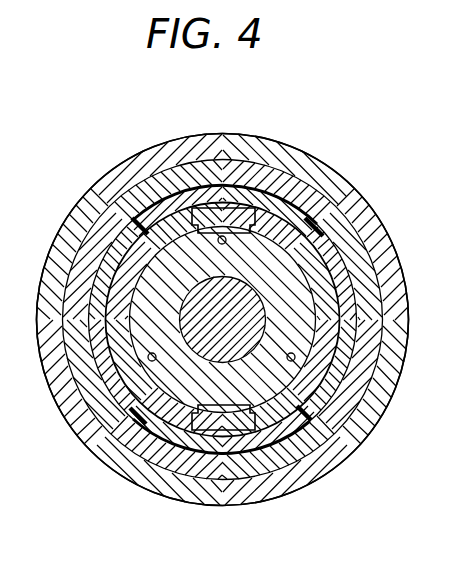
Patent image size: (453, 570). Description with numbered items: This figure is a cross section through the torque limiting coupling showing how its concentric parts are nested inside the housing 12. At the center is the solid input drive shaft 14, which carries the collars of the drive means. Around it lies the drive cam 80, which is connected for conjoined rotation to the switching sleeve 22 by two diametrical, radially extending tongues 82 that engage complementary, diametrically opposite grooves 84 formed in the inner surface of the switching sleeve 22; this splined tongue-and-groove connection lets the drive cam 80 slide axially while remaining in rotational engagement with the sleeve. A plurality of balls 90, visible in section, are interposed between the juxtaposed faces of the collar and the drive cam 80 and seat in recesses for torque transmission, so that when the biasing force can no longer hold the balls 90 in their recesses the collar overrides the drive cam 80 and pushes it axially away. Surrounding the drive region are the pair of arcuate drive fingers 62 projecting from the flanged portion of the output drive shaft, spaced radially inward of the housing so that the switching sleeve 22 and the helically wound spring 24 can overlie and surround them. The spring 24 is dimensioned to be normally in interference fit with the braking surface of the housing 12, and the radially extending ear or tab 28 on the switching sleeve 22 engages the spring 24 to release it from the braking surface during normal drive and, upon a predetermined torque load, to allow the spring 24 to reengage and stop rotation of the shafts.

The housing 12 is at (143, 141).
The ear or tab 28 is at (319, 158).
The helically wound spring 24 is at (117, 210).
The switching sleeve 22 is at (274, 428).
The drive fingers 62 is at (306, 223).
The grooves 84 is at (228, 216).
The tongues 82 is at (212, 212).
The drive cam 80 is at (240, 397).
The input drive shaft 14 is at (246, 282).
The balls 90 is at (295, 358).